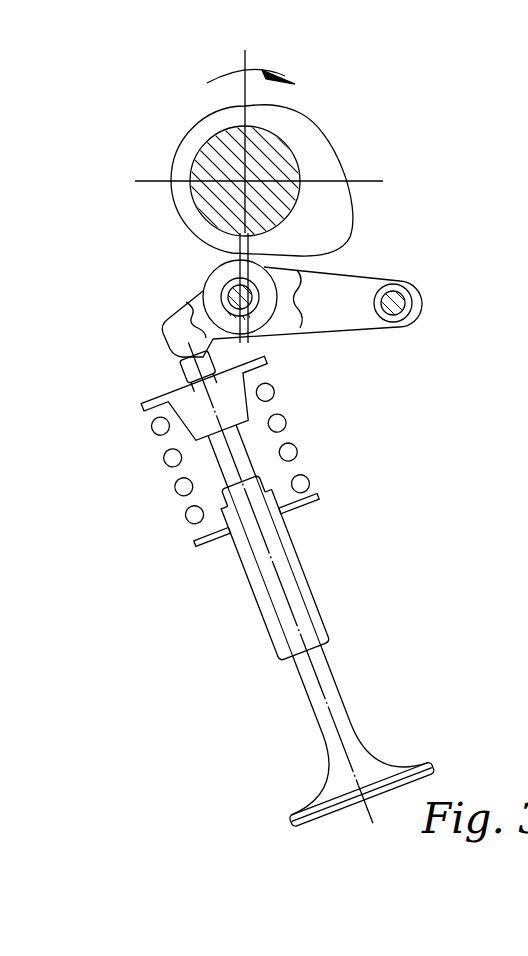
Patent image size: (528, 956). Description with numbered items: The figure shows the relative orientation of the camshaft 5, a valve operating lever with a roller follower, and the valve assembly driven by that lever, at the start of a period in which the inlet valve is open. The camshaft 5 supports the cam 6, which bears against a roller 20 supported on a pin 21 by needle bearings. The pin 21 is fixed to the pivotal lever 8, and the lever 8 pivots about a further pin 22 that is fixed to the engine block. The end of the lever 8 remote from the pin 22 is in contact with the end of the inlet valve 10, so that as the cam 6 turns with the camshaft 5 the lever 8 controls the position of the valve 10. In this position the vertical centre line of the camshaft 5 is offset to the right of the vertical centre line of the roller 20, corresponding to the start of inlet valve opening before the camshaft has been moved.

The camshaft 5 is at (220, 157).
The cam 6 is at (377, 262).
The pivotal lever 8 is at (318, 317).
The inlet valve 10 is at (323, 678).
The roller 20 is at (217, 287).
The pin 21 is at (252, 310).
The further pin 22 is at (408, 293).